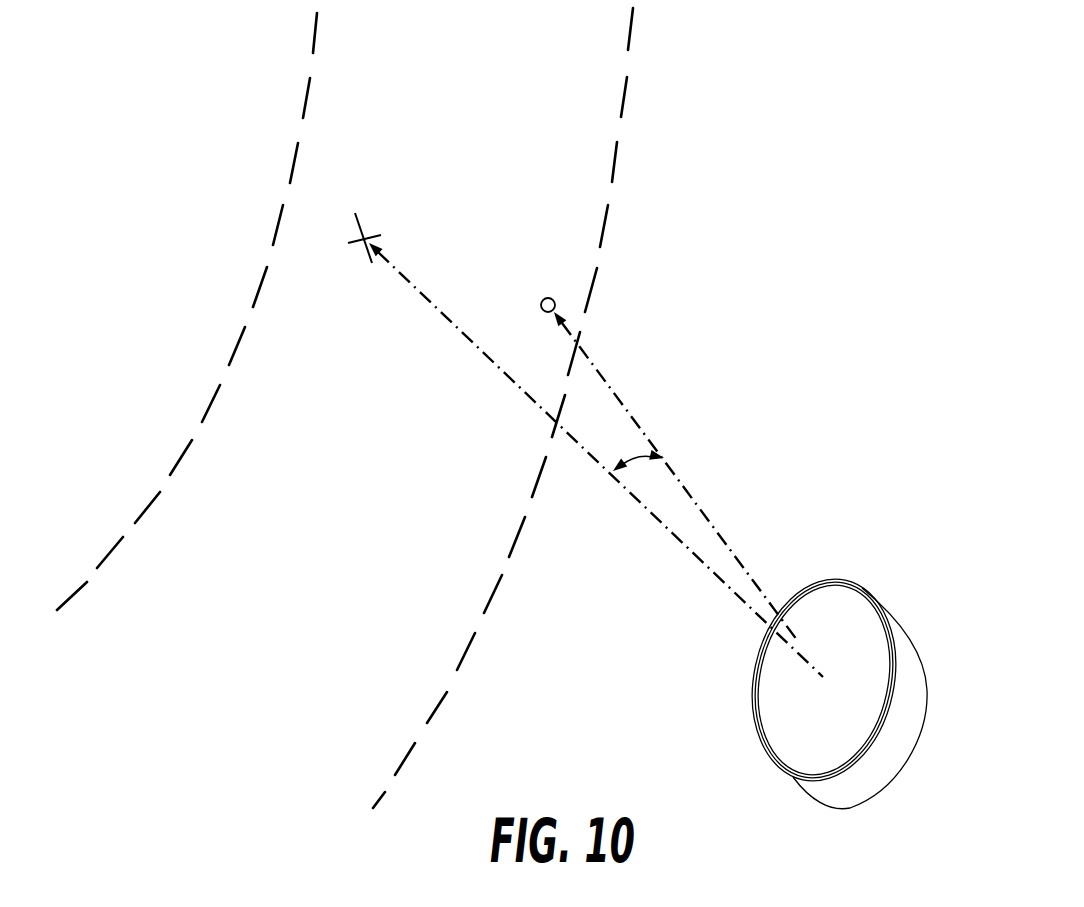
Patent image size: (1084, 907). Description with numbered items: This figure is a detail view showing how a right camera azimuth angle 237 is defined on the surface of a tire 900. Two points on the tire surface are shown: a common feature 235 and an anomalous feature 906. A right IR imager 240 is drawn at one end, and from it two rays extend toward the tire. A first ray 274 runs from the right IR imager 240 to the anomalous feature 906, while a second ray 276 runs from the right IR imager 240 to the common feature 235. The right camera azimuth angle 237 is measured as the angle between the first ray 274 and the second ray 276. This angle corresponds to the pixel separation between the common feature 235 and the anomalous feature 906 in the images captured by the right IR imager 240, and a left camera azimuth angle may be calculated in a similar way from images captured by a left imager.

The tire 900 is at (251, 685).
The anomalous feature 906 is at (366, 226).
The common feature 235 is at (565, 294).
The first ray 274 is at (457, 344).
The second ray 276 is at (716, 512).
The right camera azimuth angle 237 is at (640, 484).
The right IR imager 240 is at (886, 580).